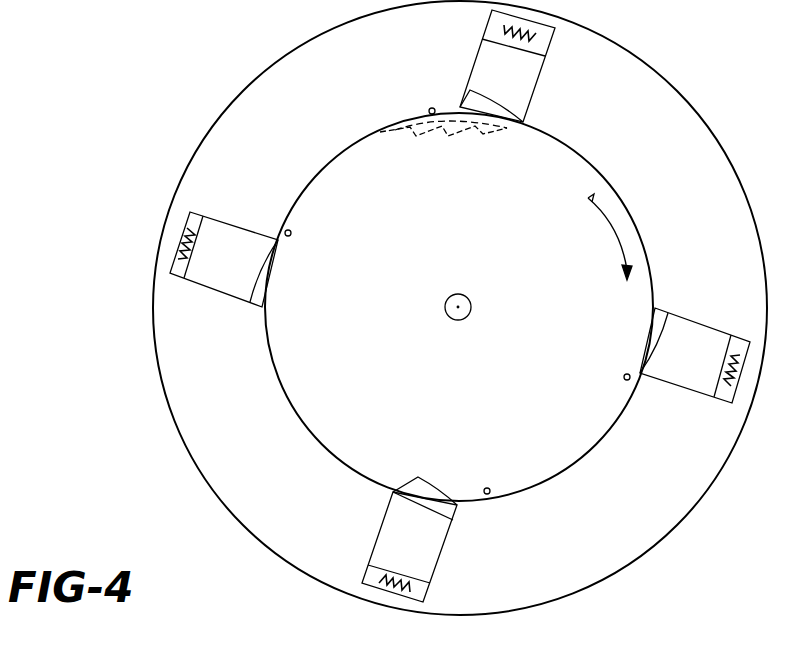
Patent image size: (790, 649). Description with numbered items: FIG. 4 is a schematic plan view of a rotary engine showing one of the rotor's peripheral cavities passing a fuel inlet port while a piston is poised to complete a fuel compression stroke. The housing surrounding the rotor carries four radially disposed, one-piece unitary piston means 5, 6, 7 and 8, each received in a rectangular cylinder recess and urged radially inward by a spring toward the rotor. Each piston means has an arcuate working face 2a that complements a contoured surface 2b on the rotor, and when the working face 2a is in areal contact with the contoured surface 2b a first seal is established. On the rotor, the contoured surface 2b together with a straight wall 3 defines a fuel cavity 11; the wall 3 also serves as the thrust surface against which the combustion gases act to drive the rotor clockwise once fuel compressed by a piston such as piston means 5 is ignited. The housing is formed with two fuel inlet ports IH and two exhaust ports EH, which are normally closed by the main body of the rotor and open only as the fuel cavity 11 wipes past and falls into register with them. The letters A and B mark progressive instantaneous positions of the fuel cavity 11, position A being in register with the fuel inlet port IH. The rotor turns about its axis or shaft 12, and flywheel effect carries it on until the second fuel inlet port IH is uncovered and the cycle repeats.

The piston means 5 is at (519, 76).
The piston means 6 is at (690, 363).
The piston means 7 is at (412, 557).
The piston means 8 is at (226, 267).
The arcuate working face 2a is at (485, 93).
The contoured surface 2b is at (395, 132).
The straight wall 3 is at (460, 127).
The fuel cavity 11 is at (428, 490).
The shaft 12 is at (450, 313).
The fuel inlet port IH is at (430, 108).
The exhaust port EH is at (292, 232).
The position A is at (428, 140).
The position B is at (504, 142).